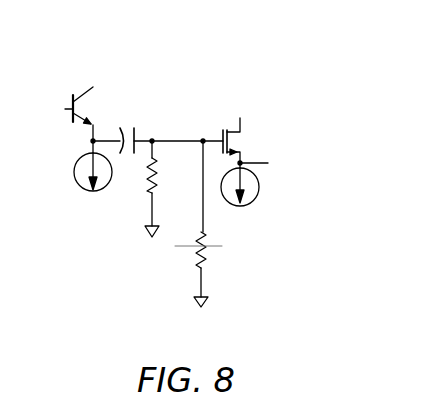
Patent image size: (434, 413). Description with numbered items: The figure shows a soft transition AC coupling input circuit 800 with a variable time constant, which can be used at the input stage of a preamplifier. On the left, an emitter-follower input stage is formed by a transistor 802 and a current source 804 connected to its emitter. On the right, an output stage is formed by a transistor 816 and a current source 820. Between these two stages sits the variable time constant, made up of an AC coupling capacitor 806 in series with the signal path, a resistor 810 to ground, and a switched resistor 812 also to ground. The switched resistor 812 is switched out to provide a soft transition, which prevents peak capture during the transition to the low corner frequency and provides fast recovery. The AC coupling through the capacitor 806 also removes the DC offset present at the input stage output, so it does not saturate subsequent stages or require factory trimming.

The soft transition AC coupling input circuit 800 is at (223, 63).
The transistor 802 is at (68, 96).
The current source 804 is at (101, 187).
The AC coupling capacitor 806 is at (136, 128).
The resistor 810 is at (176, 180).
The switched resistor 812 is at (198, 268).
The transistor 816 is at (240, 122).
The current source 820 is at (246, 204).